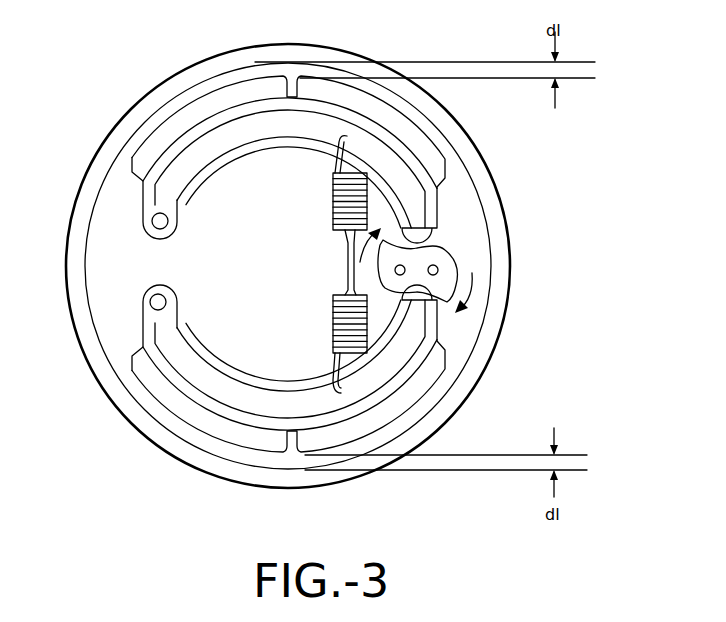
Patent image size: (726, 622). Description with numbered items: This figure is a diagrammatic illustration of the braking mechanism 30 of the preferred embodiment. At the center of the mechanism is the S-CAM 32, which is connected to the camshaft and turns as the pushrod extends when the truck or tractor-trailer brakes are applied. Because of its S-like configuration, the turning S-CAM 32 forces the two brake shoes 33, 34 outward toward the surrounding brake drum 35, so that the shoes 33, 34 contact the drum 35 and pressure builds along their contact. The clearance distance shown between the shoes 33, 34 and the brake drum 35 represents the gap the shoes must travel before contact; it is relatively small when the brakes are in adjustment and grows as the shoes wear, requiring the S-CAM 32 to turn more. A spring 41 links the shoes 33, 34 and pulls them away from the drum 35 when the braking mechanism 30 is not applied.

The braking mechanism 30 is at (662, 183).
The S-CAM 32 is at (457, 261).
The brake shoe 33 is at (440, 207).
The brake shoe 34 is at (440, 335).
The brake drum 35 is at (256, 62).
The spring 41 is at (372, 340).